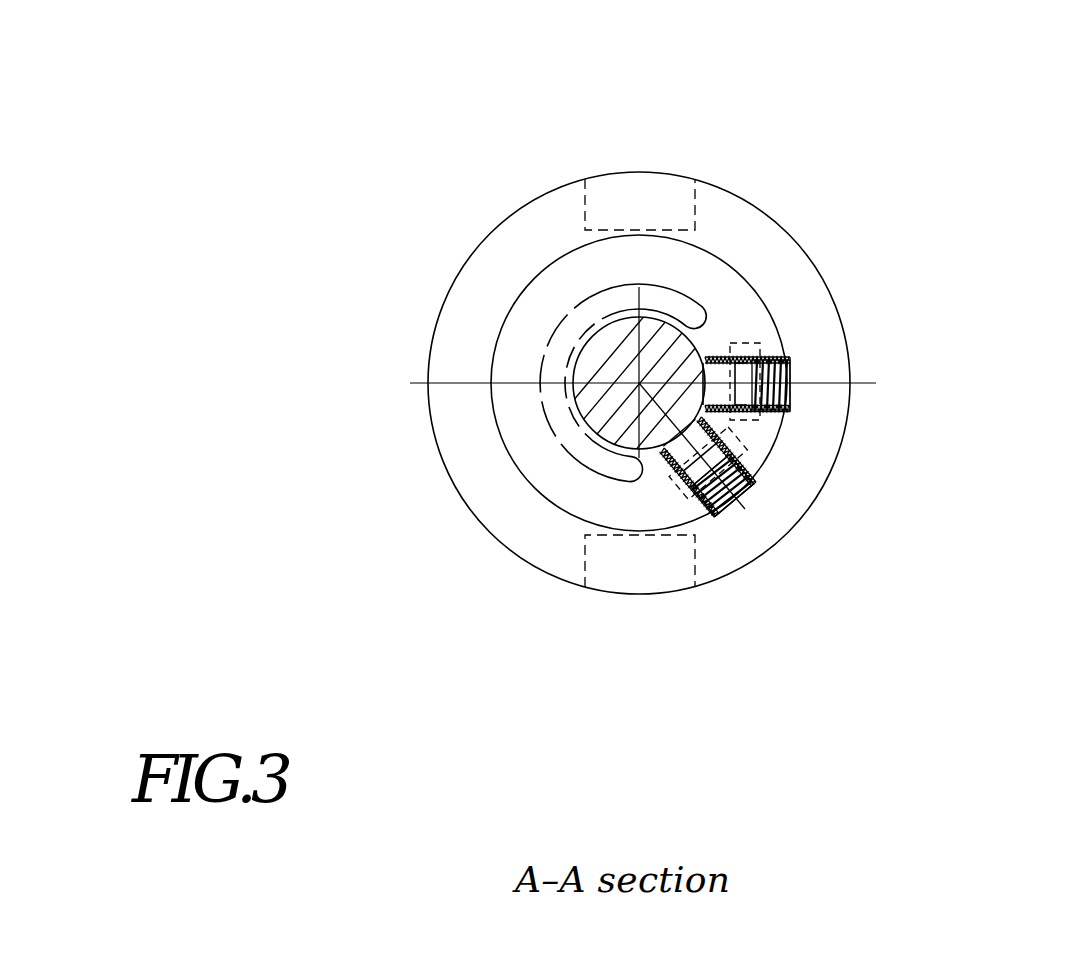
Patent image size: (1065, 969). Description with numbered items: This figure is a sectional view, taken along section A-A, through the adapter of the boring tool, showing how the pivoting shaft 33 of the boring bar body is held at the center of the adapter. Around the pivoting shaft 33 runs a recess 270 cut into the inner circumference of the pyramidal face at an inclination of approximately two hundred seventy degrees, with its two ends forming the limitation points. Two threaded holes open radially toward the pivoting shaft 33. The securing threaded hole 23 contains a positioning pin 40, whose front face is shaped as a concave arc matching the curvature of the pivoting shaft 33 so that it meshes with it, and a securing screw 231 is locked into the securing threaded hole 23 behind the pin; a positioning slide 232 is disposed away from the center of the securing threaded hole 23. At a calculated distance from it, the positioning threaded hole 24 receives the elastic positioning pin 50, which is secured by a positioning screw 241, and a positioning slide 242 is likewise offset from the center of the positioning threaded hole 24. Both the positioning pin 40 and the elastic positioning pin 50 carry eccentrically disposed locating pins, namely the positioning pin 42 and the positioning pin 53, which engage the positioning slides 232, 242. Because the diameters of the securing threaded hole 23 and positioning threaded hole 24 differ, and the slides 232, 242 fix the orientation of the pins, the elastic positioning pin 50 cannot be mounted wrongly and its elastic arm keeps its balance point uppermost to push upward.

The pivoting shaft 33 is at (603, 358).
The recess 270 is at (667, 297).
The positioning threaded hole 24 is at (717, 353).
The positioning slide 242 is at (768, 343).
The positioning screw 241 is at (790, 370).
The positioning pin 53 is at (747, 422).
The elastic positioning pin 50 is at (735, 418).
The securing threaded hole 23 is at (668, 452).
The positioning pin 40 is at (672, 478).
The positioning pin 42 is at (688, 490).
The positioning slide 232 is at (700, 500).
The securing screw 231 is at (730, 508).